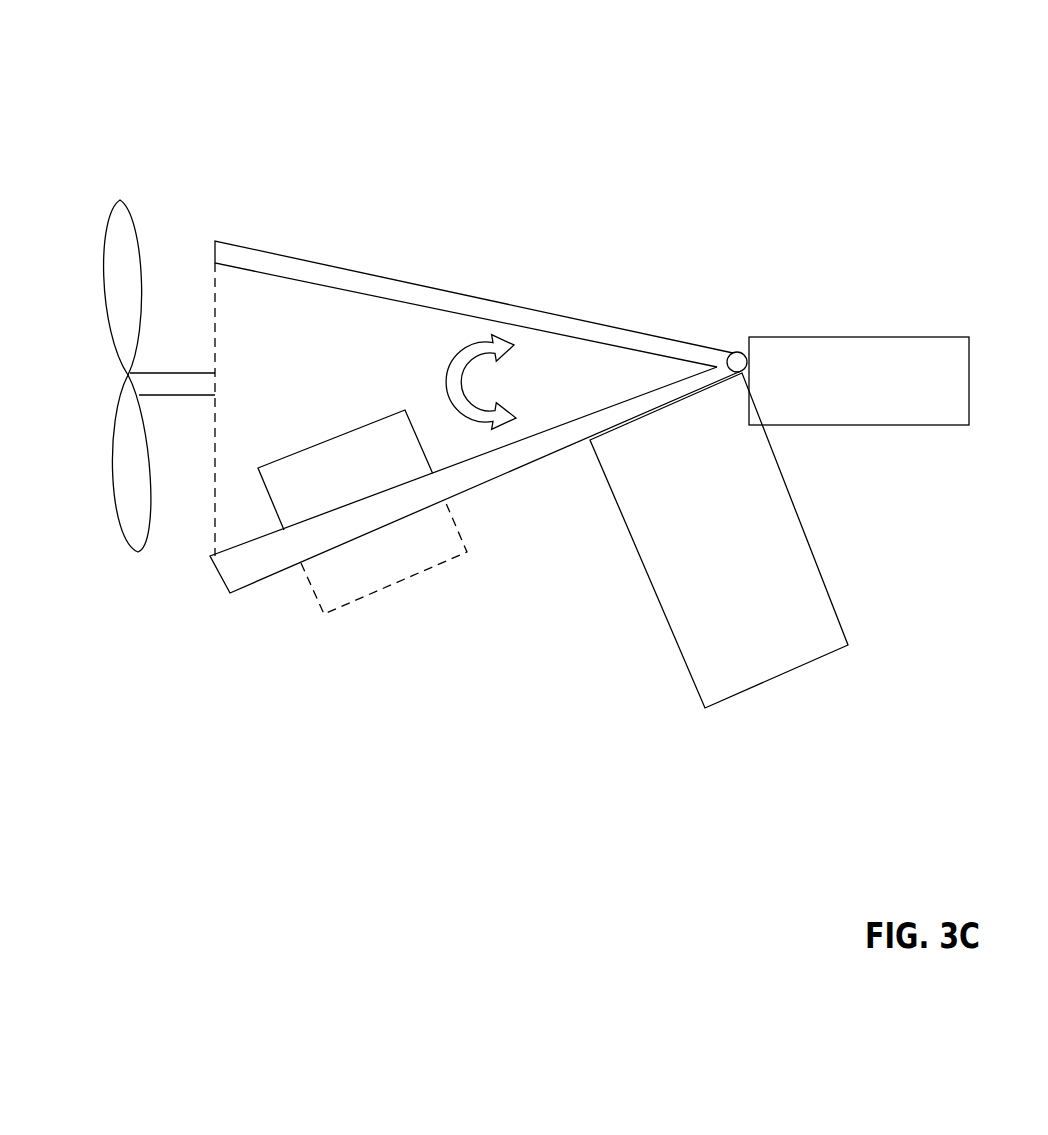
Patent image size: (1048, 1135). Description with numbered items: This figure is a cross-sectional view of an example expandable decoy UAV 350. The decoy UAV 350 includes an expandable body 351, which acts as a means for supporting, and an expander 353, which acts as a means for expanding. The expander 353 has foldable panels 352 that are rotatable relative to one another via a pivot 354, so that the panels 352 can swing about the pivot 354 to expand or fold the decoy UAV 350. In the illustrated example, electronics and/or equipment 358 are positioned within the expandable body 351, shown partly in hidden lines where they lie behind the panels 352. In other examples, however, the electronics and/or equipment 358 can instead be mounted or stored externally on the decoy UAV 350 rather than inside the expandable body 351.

The decoy UAV 350 is at (171, 64).
The expandable body 351 is at (475, 365).
The foldable panels 352 is at (565, 317).
The expander 353 is at (736, 286).
The pivot 354 is at (735, 352).
The electronics and/or equipment 358 is at (362, 452).